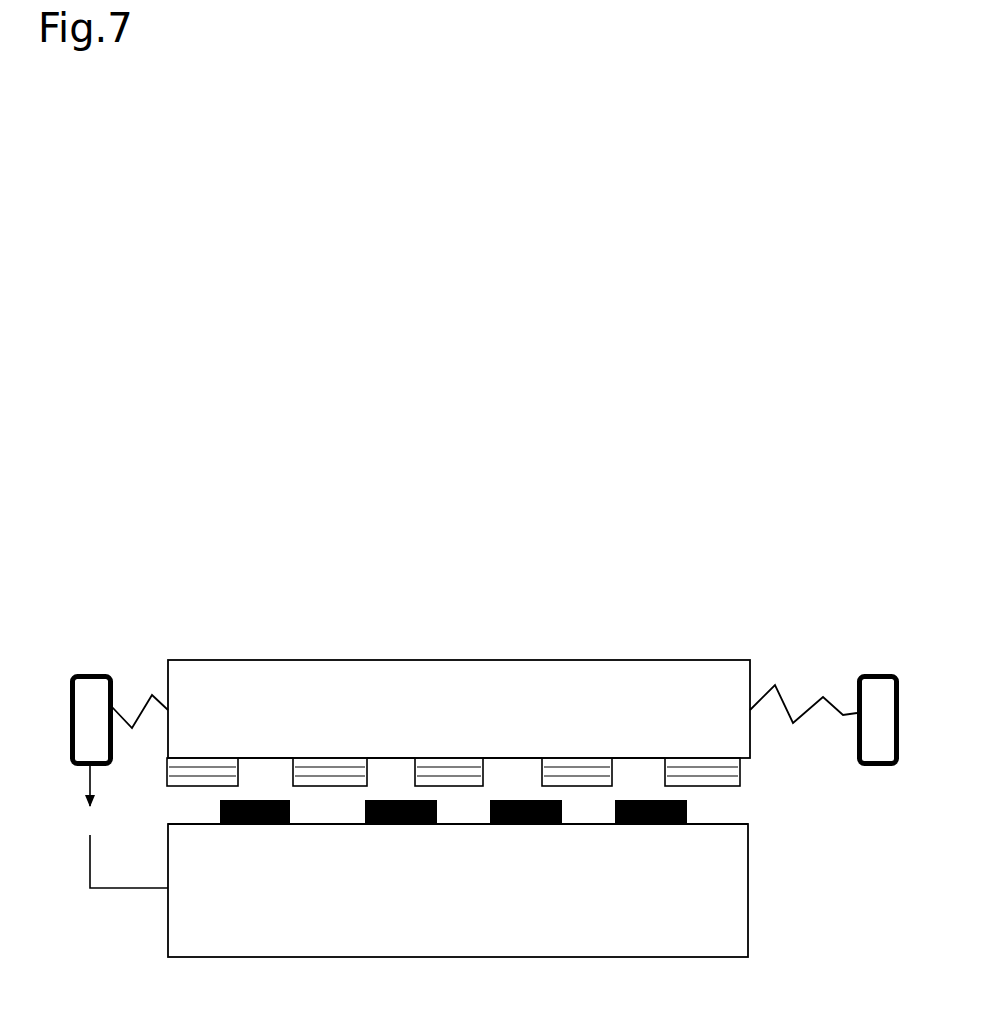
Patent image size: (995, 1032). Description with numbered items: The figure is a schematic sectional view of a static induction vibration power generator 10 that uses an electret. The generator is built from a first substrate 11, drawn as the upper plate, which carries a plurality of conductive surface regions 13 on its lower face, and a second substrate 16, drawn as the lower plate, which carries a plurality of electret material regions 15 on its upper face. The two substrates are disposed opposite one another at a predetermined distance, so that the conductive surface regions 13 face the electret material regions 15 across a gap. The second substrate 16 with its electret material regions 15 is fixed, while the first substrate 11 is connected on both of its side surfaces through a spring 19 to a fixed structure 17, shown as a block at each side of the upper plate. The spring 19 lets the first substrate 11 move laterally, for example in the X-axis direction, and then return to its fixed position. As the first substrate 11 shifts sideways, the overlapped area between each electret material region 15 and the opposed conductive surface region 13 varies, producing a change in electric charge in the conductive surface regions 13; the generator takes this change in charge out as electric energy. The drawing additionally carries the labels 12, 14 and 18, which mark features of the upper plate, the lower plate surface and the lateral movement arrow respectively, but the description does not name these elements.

The vibration power generator 10 is at (740, 427).
The first substrate 11 is at (607, 659).
The permanent magnets 12 is at (387, 757).
The conductive surface regions 13 is at (457, 760).
The upper surface of base 14 is at (332, 824).
The electret material regions 15 is at (517, 825).
The second substrate 16 is at (567, 957).
The fixed structure 17 is at (82, 675).
The vibration direction 18 is at (538, 596).
The spring 19 is at (140, 684).